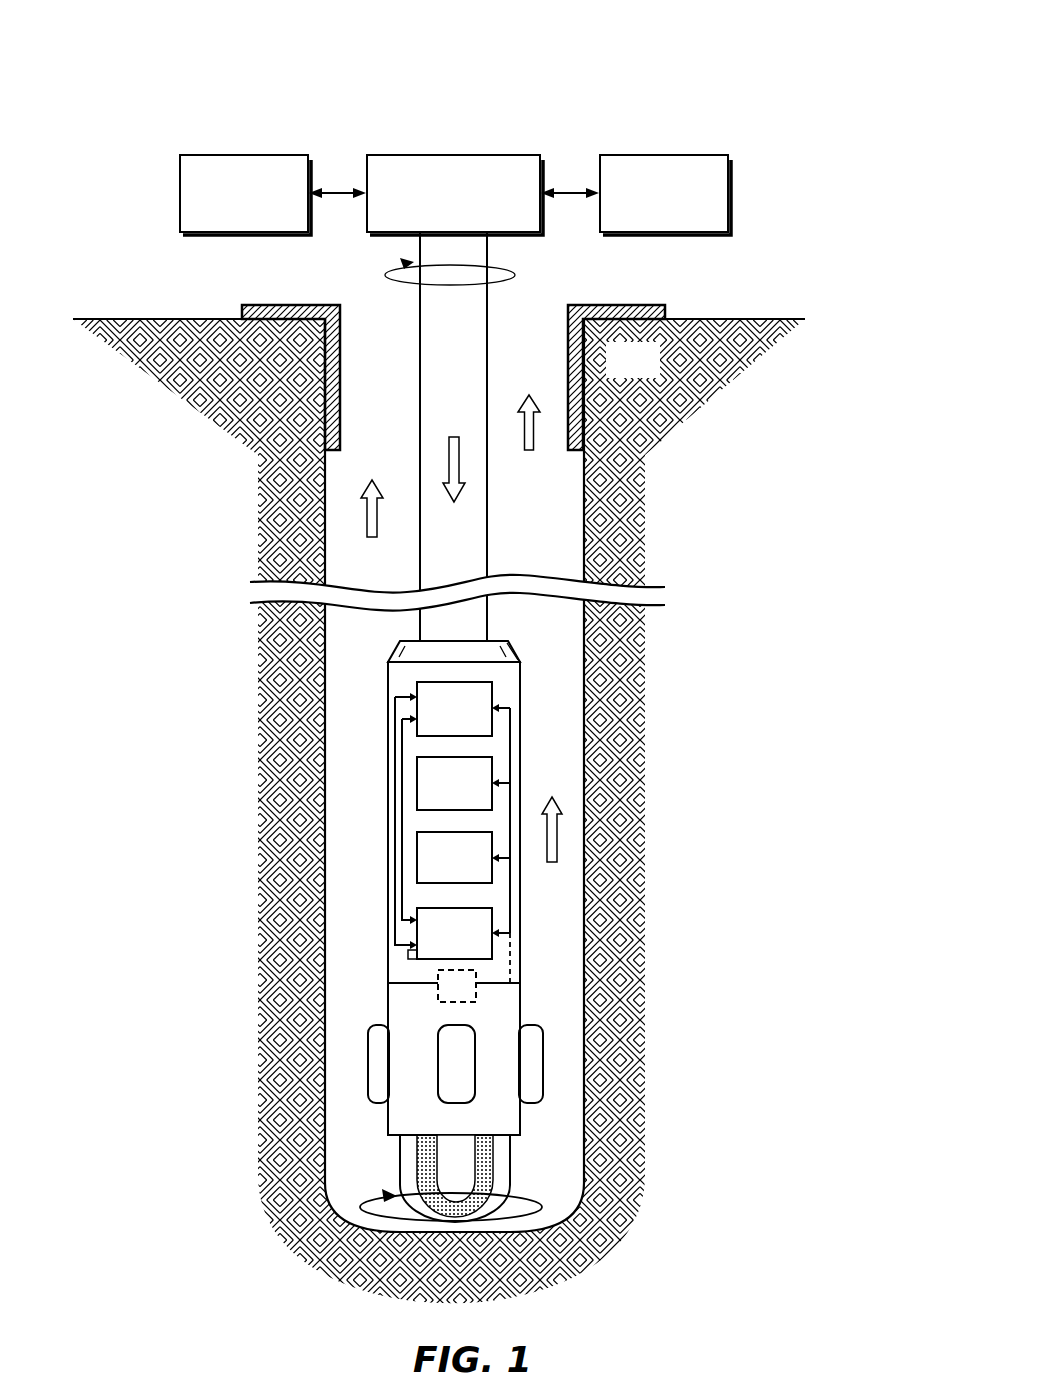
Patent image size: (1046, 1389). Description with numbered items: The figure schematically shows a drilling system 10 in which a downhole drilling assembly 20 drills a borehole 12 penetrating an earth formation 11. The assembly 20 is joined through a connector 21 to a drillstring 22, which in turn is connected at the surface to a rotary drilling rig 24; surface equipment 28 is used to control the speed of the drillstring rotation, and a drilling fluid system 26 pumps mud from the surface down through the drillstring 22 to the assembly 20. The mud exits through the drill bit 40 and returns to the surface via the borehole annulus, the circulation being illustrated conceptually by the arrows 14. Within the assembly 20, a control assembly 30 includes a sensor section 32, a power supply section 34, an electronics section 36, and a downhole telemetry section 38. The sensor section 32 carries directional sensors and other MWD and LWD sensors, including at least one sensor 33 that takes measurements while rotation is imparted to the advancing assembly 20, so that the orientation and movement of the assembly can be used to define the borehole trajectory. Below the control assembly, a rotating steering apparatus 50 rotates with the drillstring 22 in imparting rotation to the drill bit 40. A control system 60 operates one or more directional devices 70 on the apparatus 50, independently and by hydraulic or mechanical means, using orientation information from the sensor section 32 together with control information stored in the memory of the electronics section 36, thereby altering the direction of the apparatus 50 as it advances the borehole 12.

The drilling system 10 is at (773, 62).
The earth formation 11 is at (648, 375).
The borehole 12 is at (320, 800).
The arrows 14 is at (533, 433).
The downhole drilling assembly 20 is at (445, 931).
The connector 21 is at (395, 646).
The drillstring 22 is at (477, 551).
The rotary drilling rig 24 is at (483, 154).
The drilling fluid system 26 is at (691, 154).
The surface equipment 28 is at (275, 154).
The control assembly 30 is at (452, 898).
The sensor section 32 is at (492, 920).
The sensor 33 is at (410, 955).
The power supply section 34 is at (417, 852).
The electronics section 36 is at (492, 768).
The downhole telemetry section 38 is at (492, 693).
The drill bit 40 is at (398, 1176).
The rotating steering apparatus 50 is at (566, 1121).
The control system 60 is at (438, 973).
The directional devices 70 is at (518, 1090).